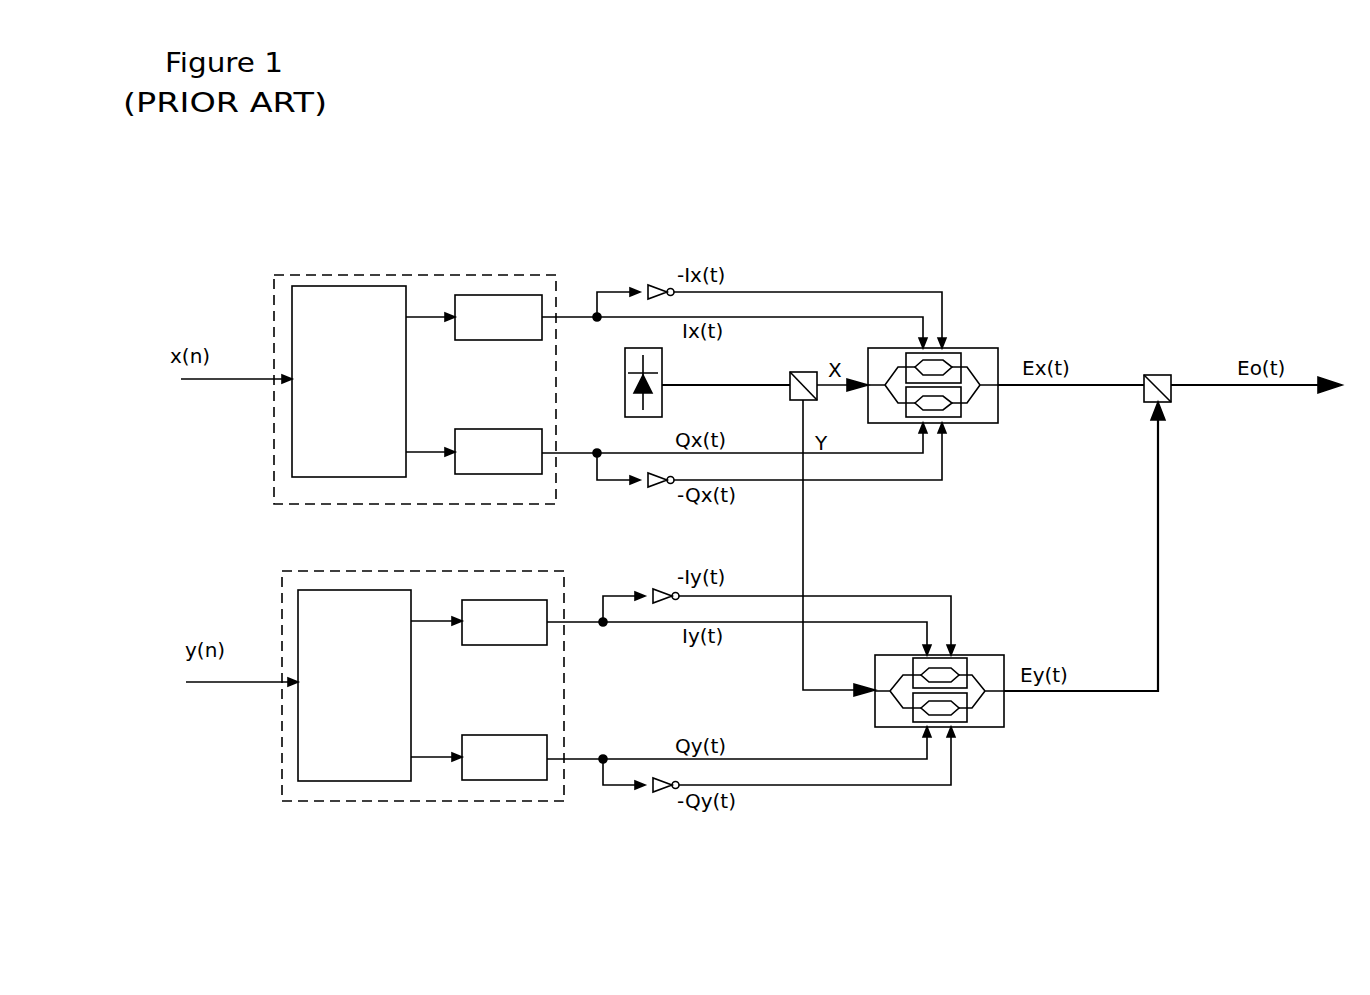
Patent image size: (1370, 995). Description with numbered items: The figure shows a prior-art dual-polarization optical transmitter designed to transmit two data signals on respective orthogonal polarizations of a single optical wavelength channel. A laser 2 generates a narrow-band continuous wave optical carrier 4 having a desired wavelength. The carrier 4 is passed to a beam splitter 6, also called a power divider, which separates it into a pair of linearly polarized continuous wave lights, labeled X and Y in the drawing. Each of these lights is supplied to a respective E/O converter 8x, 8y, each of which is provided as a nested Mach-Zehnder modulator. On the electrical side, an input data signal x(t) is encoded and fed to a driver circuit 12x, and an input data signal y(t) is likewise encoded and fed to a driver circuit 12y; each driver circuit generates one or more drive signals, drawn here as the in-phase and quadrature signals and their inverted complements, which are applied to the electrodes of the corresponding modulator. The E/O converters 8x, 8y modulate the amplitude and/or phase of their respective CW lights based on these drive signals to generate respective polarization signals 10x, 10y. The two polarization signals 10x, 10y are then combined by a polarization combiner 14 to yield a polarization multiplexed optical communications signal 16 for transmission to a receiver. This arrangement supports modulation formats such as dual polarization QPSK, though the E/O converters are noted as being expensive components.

The laser 2 is at (625, 392).
The optical carrier 4 is at (735, 385).
The beam splitter 6 is at (810, 372).
The E/O converter 8x is at (985, 348).
The E/O converter 8y is at (993, 655).
The polarization signal 10x is at (1078, 388).
The polarization signal 10y is at (1117, 693).
The driver circuit 12x is at (423, 275).
The driver circuit 12y is at (440, 571).
The polarization combiner 14 is at (1162, 375).
The polarization multiplexed optical communications signal 16 is at (1242, 388).